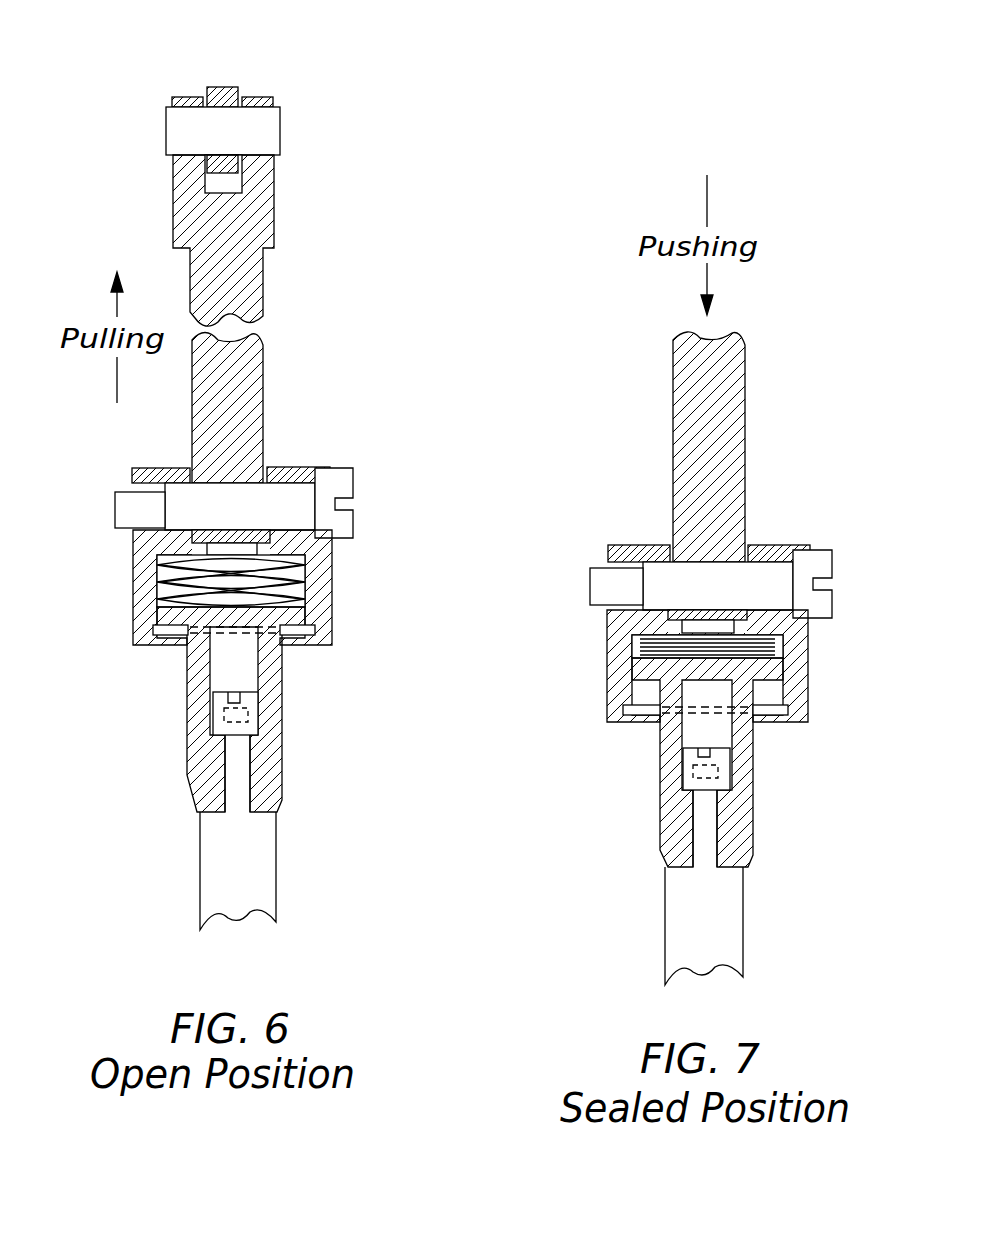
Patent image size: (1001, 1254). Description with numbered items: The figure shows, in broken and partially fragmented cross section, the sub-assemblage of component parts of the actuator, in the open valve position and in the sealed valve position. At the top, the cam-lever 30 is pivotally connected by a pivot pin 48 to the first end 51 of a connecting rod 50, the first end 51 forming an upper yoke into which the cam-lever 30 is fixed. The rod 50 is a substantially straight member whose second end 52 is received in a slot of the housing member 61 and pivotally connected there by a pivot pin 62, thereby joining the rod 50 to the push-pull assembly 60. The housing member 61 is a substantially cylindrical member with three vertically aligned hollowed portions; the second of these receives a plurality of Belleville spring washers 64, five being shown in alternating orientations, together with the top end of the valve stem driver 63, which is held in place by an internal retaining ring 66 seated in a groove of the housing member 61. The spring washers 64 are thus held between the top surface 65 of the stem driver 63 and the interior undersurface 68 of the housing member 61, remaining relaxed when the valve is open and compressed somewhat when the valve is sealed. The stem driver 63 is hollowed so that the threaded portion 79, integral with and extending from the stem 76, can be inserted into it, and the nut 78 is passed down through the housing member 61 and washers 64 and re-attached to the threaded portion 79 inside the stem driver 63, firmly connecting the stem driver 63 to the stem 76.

In FIG. 6, the cam-lever 30 is at (223, 87).
In FIG. 6, the pivot pin 48 is at (280, 118).
In FIG. 6, the first end 51 is at (274, 205).
In FIG. 6, the connecting rod 50 is at (265, 395).
In FIG. 7, the connecting rod 50 is at (745, 377).
In FIG. 6, the push-pull assembly 60 is at (448, 438).
In FIG. 7, the push-pull assembly 60 is at (585, 522).
In FIG. 6, the housing member 61 is at (297, 466).
In FIG. 7, the housing member 61 is at (773, 543).
In FIG. 6, the pivot pin 62 is at (353, 520).
In FIG. 7, the pivot pin 62 is at (832, 590).
In FIG. 6, the interior undersurface 68 is at (150, 575).
In FIG. 7, the interior undersurface 68 is at (634, 637).
In FIG. 6, the second end 52 is at (195, 552).
In FIG. 7, the second end 52 is at (785, 627).
In FIG. 6, the spring washers 64 is at (290, 575).
In FIG. 7, the spring washers 64 is at (637, 655).
In FIG. 6, the top surface 65 is at (305, 600).
In FIG. 7, the top surface 65 is at (785, 645).
In FIG. 6, the retaining ring 66 is at (303, 643).
In FIG. 6, the valve stem driver 63 is at (282, 768).
In FIG. 7, the valve stem driver 63 is at (753, 825).
In FIG. 6, the nut 78 is at (222, 702).
In FIG. 7, the nut 78 is at (692, 752).
In FIG. 6, the threaded portion 79 is at (238, 768).
In FIG. 7, the threaded portion 79 is at (703, 830).
In FIG. 6, the stem 76 is at (276, 860).
In FIG. 7, the stem 76 is at (743, 913).